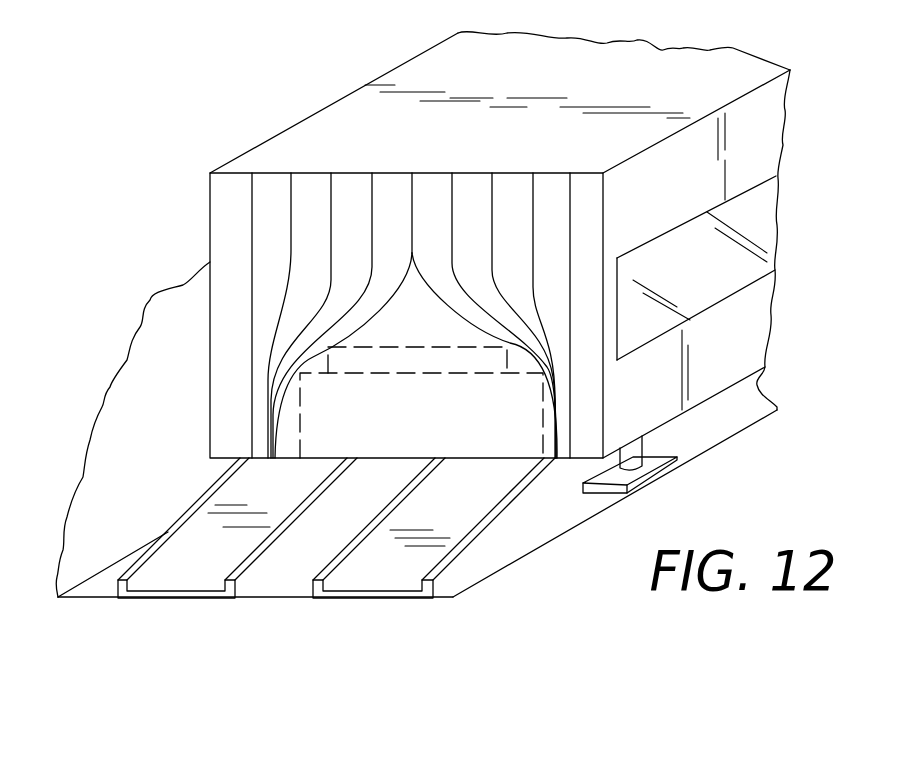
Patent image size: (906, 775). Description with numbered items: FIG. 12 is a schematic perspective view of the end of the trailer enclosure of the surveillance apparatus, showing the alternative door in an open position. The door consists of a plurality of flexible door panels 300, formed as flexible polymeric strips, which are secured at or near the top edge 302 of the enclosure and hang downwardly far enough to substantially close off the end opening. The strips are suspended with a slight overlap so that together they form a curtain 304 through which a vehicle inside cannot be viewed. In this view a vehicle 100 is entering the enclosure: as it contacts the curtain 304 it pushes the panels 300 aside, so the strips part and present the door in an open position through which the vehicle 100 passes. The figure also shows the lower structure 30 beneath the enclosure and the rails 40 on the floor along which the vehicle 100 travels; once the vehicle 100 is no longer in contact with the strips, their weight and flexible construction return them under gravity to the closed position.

The flexible door panels 300 is at (302, 210).
The top edge 302 is at (276, 173).
The curtain 304 is at (391, 189).
The vehicle 100 is at (455, 428).
The conductors 30 is at (552, 320).
The guide rails 40 is at (173, 570).